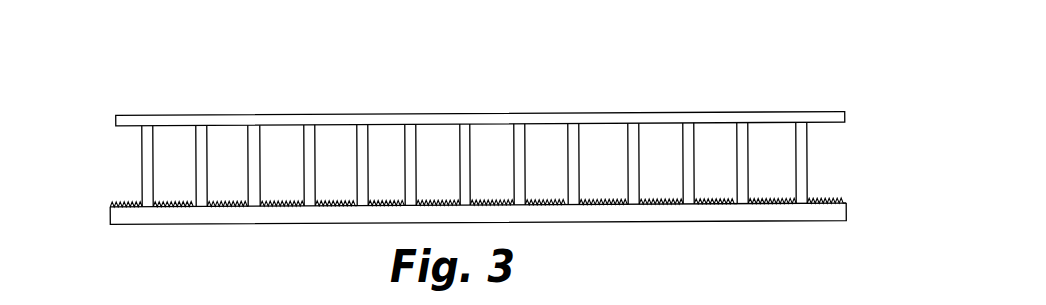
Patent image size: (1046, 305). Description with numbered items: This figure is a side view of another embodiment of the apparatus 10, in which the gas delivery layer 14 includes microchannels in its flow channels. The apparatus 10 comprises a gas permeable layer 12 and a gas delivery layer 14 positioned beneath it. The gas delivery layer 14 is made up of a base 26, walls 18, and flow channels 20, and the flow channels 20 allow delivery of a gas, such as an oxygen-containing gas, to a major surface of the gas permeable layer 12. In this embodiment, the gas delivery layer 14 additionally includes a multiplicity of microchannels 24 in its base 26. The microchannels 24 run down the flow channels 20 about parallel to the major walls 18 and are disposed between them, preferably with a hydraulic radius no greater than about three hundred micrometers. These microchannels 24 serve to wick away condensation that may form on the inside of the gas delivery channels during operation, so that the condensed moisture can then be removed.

The apparatus 10 is at (451, 153).
The gas permeable layer 12 is at (128, 120).
The gas delivery layer 14 is at (451, 167).
The walls 18 is at (305, 140).
The flow channels 20 is at (485, 137).
The microchannels 24 is at (234, 204).
The base 26 is at (660, 210).